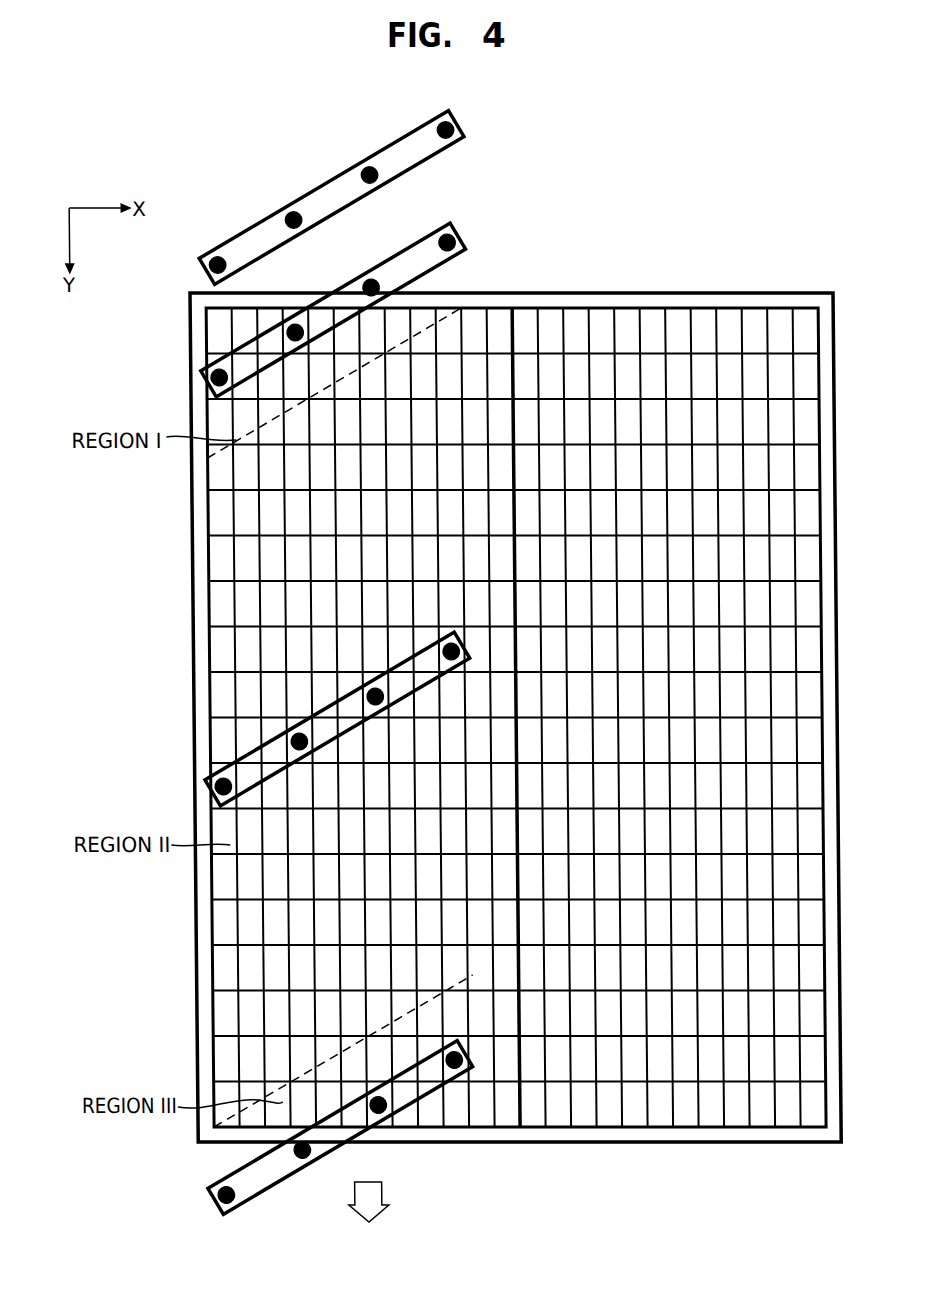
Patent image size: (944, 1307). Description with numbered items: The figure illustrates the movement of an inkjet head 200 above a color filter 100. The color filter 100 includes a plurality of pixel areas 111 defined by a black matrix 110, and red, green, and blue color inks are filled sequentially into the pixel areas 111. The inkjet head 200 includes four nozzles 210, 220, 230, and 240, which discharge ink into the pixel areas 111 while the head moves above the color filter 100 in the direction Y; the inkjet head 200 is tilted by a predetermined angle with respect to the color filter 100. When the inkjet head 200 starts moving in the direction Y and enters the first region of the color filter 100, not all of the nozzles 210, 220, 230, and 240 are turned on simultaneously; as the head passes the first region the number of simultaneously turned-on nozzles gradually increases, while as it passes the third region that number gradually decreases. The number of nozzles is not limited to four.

The color filter 100 is at (742, 293).
The black matrix 110 is at (457, 328).
The pixel areas 111 is at (207, 342).
The inkjet head 200 is at (440, 146).
The nozzle 210 is at (208, 266).
The nozzle 220 is at (292, 208).
The nozzle 230 is at (367, 165).
The nozzle 240 is at (440, 123).